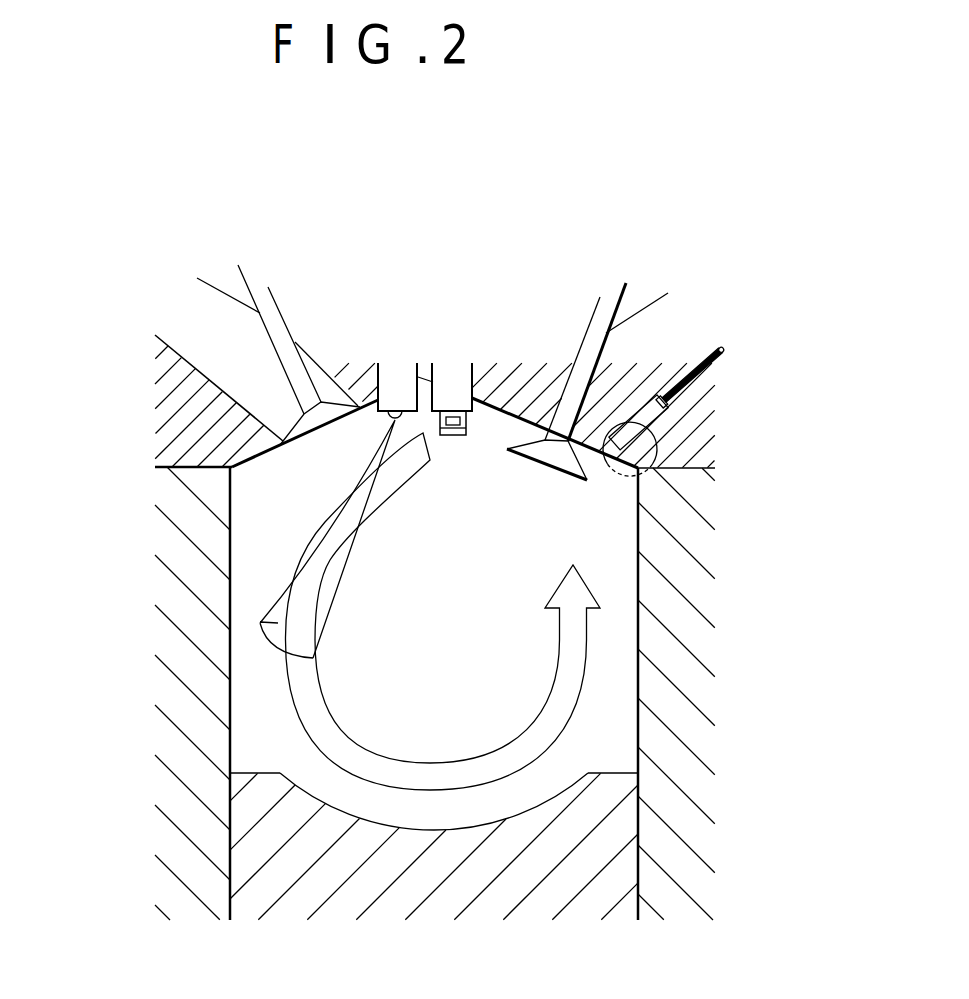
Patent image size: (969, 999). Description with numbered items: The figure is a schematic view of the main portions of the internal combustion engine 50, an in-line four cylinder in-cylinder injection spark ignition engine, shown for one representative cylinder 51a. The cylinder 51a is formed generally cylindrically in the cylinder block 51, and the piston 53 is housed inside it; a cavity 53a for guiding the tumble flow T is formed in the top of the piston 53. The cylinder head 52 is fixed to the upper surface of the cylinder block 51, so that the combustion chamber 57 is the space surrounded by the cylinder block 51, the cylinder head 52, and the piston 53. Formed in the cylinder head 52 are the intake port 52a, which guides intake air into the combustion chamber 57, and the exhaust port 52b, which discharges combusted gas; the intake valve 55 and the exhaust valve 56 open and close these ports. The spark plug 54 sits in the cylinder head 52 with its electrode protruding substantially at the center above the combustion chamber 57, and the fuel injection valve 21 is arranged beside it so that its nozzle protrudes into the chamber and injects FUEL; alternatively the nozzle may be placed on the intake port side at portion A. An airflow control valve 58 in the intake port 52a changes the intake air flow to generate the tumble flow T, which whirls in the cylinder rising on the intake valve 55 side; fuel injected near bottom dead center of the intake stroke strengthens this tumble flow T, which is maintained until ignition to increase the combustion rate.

The internal combustion engine 50 is at (187, 233).
The cylinder head 52 is at (195, 432).
The intake port 52a is at (652, 316).
The exhaust port 52b is at (176, 351).
The exhaust valve 56 is at (277, 327).
The fuel injection valve 21 is at (395, 377).
The spark plug 54 is at (460, 380).
The intake valve 55 is at (590, 347).
The airflow control valve 58 is at (688, 366).
The portion A is at (658, 440).
The combustion chamber 57 is at (588, 520).
The tumble flow T is at (575, 598).
The cylinder block 51 is at (187, 673).
The cylinder 51a is at (632, 686).
The piston 53 is at (263, 847).
The cavity 53a is at (330, 803).
The fuel spray FUEL is at (260, 622).